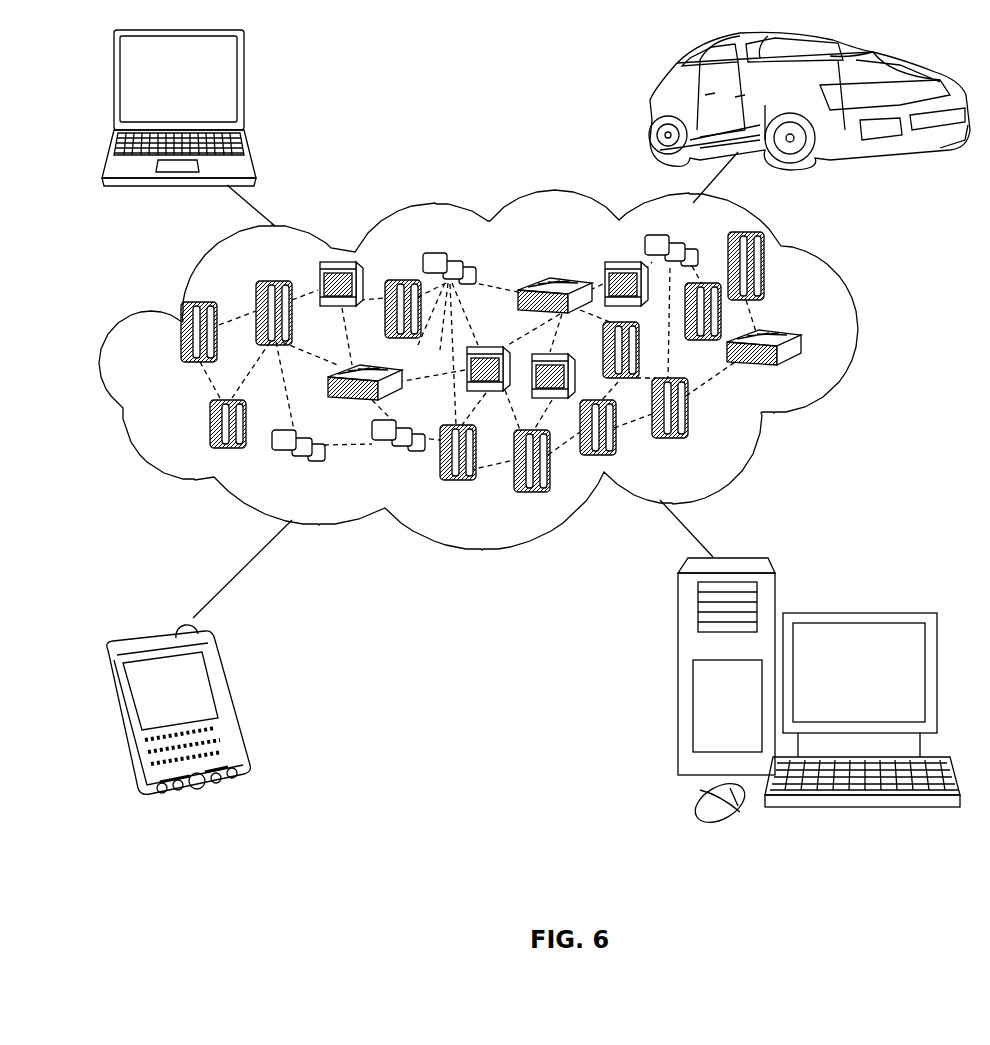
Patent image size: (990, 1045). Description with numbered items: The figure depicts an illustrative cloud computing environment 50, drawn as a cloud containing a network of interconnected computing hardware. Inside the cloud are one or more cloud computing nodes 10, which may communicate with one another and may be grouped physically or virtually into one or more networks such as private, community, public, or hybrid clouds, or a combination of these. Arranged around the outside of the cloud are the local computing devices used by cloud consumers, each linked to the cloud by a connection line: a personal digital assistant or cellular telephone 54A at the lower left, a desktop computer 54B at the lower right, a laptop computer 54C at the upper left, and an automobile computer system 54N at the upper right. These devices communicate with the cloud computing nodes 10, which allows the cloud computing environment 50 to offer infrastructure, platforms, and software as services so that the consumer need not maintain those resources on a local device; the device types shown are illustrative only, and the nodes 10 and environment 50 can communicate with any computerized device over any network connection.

The cloud computing environment 50 is at (858, 343).
The cloud computing node 10 is at (810, 373).
The personal digital assistant or cellular telephone 54A is at (235, 700).
The desktop computer 54B is at (860, 612).
The laptop computer 54C is at (246, 90).
The automobile computer system 54N is at (650, 102).